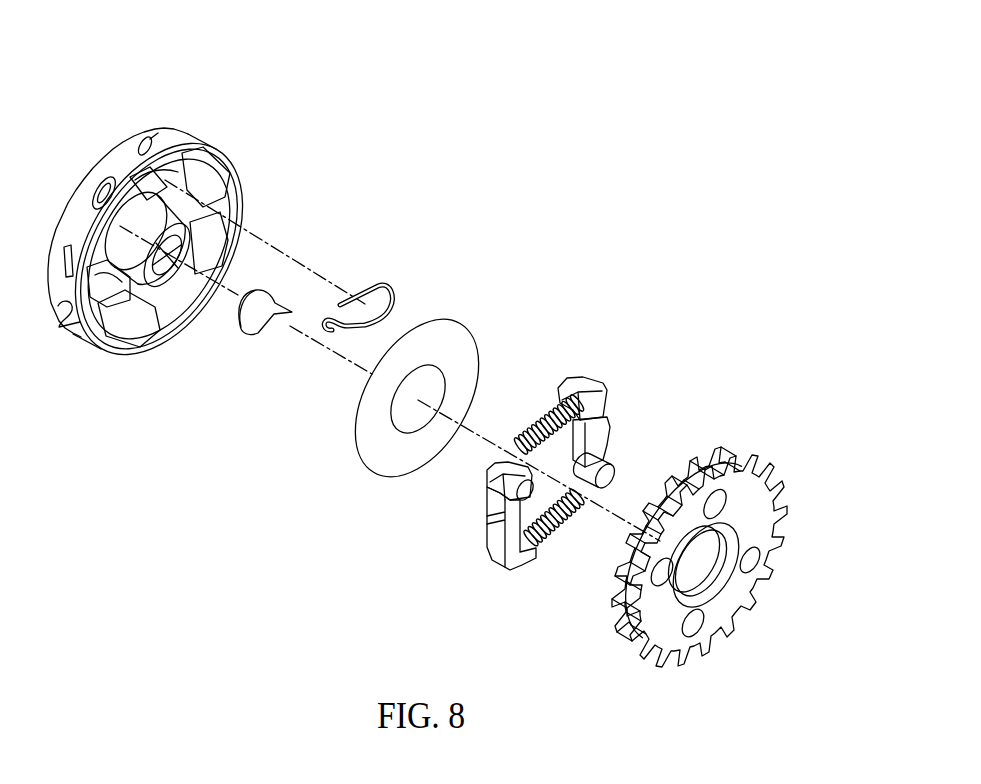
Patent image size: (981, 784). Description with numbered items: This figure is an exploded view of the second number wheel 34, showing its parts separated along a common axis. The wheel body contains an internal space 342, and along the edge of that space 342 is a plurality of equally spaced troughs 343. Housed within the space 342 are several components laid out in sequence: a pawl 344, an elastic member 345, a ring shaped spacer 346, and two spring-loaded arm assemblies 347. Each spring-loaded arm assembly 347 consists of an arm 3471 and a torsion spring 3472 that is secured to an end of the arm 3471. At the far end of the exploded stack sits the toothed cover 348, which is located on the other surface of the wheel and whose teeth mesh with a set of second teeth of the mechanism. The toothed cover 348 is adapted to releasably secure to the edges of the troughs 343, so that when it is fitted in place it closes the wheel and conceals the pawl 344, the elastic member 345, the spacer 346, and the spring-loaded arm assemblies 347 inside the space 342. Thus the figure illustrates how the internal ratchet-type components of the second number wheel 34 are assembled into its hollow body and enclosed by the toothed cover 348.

The second number wheel 34 is at (190, 99).
The internal space 342 is at (174, 168).
The troughs 343 is at (234, 175).
The pawl 344 is at (256, 326).
The elastic member 345 is at (380, 282).
The ring shaped spacer 346 is at (450, 330).
The spring-loaded arm assemblies 347 is at (608, 343).
The arm 3471 is at (595, 410).
The torsion spring 3472 is at (550, 402).
The toothed cover 348 is at (748, 500).